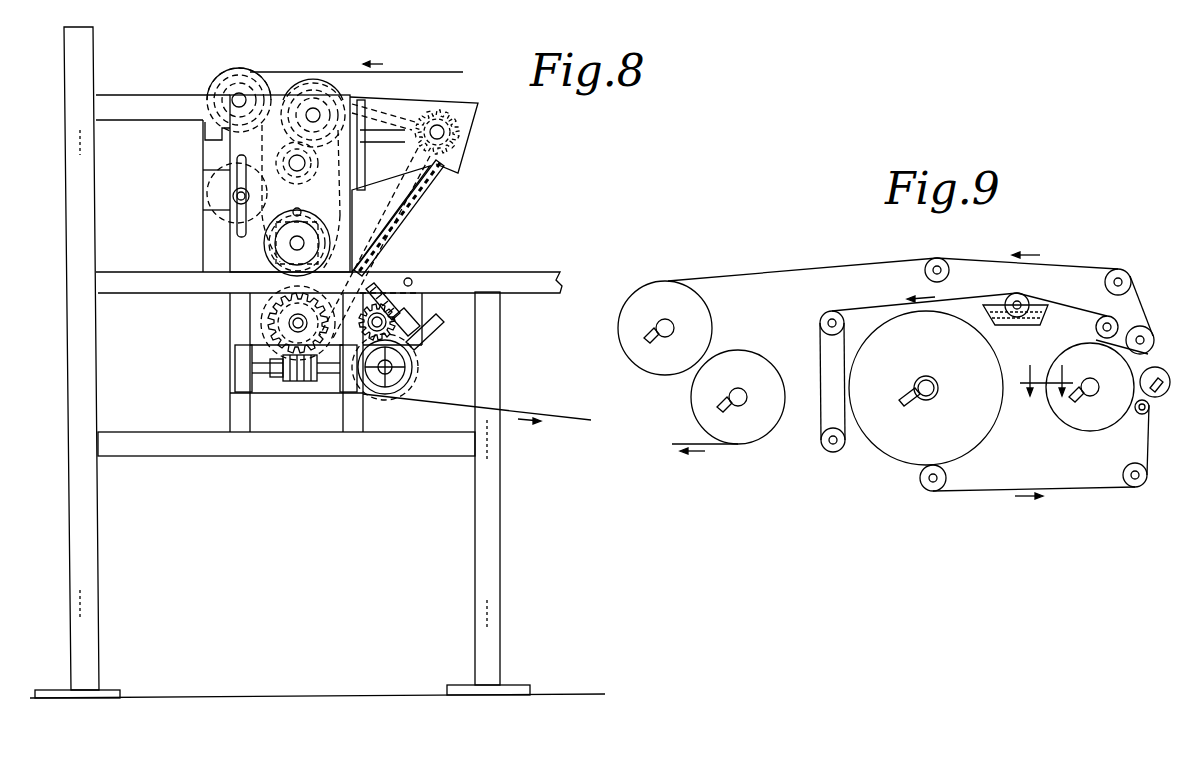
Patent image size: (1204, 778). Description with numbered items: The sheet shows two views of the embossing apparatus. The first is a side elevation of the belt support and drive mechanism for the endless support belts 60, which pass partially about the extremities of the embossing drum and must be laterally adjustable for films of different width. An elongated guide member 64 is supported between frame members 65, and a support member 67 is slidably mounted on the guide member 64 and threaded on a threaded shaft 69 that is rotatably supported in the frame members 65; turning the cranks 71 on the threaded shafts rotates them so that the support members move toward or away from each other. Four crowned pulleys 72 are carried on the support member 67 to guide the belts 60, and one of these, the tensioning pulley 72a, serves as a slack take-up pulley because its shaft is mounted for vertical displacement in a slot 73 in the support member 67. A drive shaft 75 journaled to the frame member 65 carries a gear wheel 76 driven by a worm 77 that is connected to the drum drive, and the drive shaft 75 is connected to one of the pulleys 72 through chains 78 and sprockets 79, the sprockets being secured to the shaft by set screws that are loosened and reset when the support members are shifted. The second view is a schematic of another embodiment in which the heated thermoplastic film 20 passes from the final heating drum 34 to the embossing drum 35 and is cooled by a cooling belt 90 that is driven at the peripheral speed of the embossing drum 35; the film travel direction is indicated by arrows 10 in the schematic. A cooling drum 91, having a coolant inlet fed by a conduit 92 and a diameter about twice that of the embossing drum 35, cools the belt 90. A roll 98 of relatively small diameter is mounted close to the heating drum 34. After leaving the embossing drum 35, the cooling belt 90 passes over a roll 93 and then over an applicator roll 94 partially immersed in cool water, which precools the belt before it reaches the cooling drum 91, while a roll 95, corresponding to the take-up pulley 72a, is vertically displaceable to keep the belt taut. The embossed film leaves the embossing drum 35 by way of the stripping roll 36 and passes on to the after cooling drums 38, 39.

In FIG. 8, the endless support belts 60 is at (433, 72).
In FIG. 8, the frame members 65 is at (90, 523).
In FIG. 8, the crowned pulleys 72 is at (247, 70).
In FIG. 8, the tensioning pulley 72a is at (215, 192).
In FIG. 8, the slot 73 is at (237, 237).
In FIG. 8, the guide member 64 is at (298, 172).
In FIG. 8, the threaded shaft 69 is at (290, 244).
In FIG. 8, the cranks 71 is at (275, 268).
In FIG. 8, the gear wheel 76 is at (270, 308).
In FIG. 8, the drive shaft 75 is at (283, 323).
In FIG. 8, the worm 77 is at (288, 382).
In FIG. 8, the chains 78 is at (403, 108).
In FIG. 8, the sprockets 79 is at (360, 235).
In FIG. 8, the support member 67 is at (356, 192).
In FIG. 9, the after cooling drum 38 is at (706, 330).
In FIG. 9, the after cooling drum 39 is at (702, 392).
In FIG. 9, the roll 95 is at (830, 448).
In FIG. 9, the cooling drum 91 is at (918, 446).
In FIG. 9, the conduit 92 is at (917, 401).
In FIG. 9, the web 10 is at (893, 324).
In FIG. 9, the applicator roll 94 is at (1024, 301).
In FIG. 9, the roll 93 is at (1096, 327).
In FIG. 9, the stripping roll 36 is at (1138, 328).
In FIG. 9, the embossing drum 35 is at (1073, 412).
In FIG. 9, the final heating drum 34 is at (1157, 373).
In FIG. 9, the thermoplastic film 20 is at (1164, 418).
In FIG. 9, the roll 98 is at (1140, 412).
In FIG. 9, the cooling belt 90 is at (1110, 488).